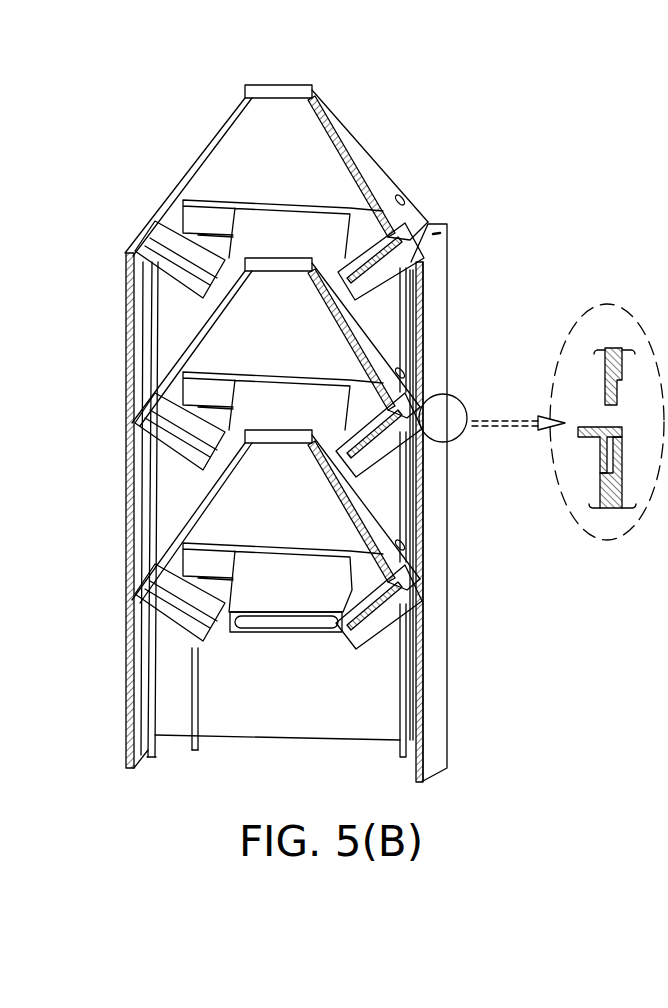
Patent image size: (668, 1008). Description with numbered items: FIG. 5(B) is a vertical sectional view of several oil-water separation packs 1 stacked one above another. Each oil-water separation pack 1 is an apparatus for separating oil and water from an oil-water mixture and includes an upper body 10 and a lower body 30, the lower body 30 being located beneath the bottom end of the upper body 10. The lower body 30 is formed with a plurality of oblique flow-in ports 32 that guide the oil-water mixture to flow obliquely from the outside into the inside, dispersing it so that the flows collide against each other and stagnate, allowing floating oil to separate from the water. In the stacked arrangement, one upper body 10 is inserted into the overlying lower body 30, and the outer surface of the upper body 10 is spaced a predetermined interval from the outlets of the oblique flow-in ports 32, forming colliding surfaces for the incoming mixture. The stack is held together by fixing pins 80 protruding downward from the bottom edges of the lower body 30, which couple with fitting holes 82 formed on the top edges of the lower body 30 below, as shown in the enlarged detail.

The oil-water separation pack 1 is at (440, 130).
The upper body 10 is at (214, 133).
The lower body 30 is at (448, 308).
The oblique flow-in ports 32 is at (197, 258).
The fixing pins 80 is at (153, 757).
The fitting holes 82 is at (603, 463).